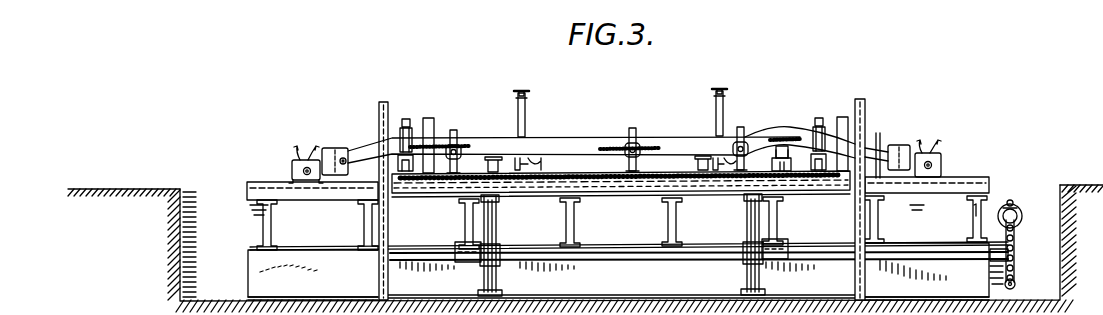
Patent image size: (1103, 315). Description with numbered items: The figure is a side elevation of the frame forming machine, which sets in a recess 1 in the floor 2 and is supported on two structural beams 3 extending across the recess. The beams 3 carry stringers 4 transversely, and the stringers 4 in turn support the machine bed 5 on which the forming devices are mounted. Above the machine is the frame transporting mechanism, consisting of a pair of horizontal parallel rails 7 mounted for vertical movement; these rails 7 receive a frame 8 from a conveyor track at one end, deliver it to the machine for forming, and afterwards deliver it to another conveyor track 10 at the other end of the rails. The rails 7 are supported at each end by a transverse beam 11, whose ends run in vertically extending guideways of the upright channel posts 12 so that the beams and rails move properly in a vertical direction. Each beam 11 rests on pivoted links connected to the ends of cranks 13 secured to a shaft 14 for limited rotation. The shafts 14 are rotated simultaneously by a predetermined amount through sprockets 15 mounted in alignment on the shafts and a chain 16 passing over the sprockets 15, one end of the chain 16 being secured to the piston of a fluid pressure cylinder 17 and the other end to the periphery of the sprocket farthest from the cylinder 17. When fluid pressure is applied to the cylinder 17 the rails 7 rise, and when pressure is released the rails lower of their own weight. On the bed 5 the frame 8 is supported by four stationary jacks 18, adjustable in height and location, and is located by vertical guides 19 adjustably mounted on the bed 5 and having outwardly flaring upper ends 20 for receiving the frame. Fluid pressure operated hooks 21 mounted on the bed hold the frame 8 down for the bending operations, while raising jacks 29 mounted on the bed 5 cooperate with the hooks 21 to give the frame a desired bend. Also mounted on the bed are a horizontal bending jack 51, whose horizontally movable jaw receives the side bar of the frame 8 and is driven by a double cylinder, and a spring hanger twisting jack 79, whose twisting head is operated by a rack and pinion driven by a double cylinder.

The recess 1 is at (190, 246).
The floor 2 is at (157, 188).
The structural beams 3 is at (256, 277).
The stringers 4 is at (259, 216).
The machine bed 5 is at (272, 181).
The rails 7 is at (533, 166).
The frame 8 is at (598, 136).
The conveyor track 10 is at (527, 94).
The transverse beam 11 is at (545, 184).
The upright channel posts 12 is at (379, 107).
The cranks 13 is at (497, 283).
The shaft 14 is at (606, 262).
The sprockets 15 is at (1017, 263).
The chain 16 is at (1016, 243).
The fluid pressure cylinder 17 is at (1019, 212).
The stationary jacks 18 is at (494, 156).
The vertical guides 19 is at (376, 123).
The outwardly flaring upper ends 20 is at (880, 133).
The fluid pressure operated hooks 21 is at (405, 119).
The raising jacks 29 is at (777, 142).
The horizontal bending jack 51 is at (457, 132).
The spring hanger twisting jack 79 is at (331, 147).